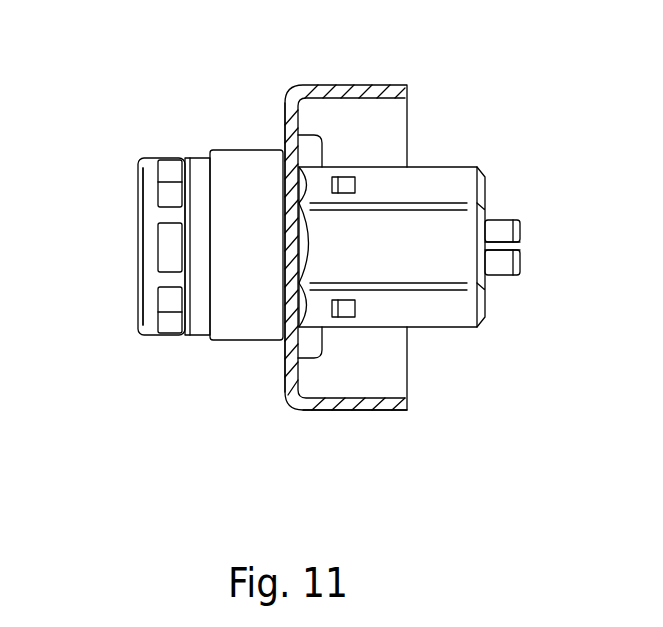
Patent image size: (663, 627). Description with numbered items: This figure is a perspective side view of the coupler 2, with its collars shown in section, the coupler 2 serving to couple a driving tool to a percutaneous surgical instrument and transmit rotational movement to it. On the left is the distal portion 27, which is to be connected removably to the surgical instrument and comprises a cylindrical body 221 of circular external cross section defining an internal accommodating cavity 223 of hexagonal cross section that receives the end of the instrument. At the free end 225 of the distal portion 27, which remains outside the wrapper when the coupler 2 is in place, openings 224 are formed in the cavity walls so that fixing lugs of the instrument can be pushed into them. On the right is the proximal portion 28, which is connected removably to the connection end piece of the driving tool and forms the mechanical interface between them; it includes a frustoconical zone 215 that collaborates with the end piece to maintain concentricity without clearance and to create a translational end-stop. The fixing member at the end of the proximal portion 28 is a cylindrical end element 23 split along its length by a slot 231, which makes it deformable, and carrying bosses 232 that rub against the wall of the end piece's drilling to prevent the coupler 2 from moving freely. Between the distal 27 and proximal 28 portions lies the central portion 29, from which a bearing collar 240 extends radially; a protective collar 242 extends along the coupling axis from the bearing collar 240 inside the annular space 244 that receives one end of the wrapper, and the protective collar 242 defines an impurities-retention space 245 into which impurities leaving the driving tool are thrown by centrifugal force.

The coupler 2 is at (548, 90).
The cylindrical body 221 is at (246, 245).
The accommodating cavity 223 is at (136, 238).
The openings 224 is at (173, 245).
The free end 225 is at (152, 166).
The distal portion 27 is at (138, 336).
The proximal portion 28 is at (480, 166).
The central portion 29 is at (300, 166).
The end element 23 is at (500, 263).
The slot 231 is at (520, 247).
The bosses 232 is at (505, 220).
The bearing collar 240 is at (283, 130).
The protective collar 242 is at (306, 160).
The annular space 244 is at (325, 372).
The impurities-retention space 245 is at (303, 140).
The frustoconical zone 215 is at (310, 185).